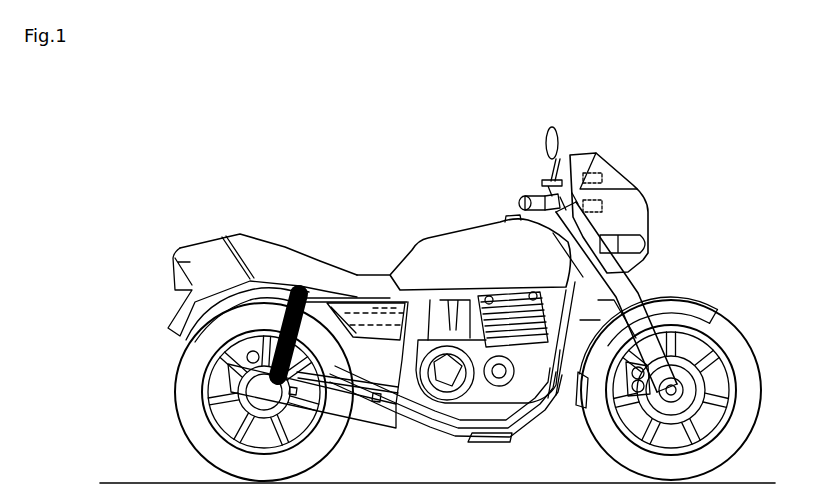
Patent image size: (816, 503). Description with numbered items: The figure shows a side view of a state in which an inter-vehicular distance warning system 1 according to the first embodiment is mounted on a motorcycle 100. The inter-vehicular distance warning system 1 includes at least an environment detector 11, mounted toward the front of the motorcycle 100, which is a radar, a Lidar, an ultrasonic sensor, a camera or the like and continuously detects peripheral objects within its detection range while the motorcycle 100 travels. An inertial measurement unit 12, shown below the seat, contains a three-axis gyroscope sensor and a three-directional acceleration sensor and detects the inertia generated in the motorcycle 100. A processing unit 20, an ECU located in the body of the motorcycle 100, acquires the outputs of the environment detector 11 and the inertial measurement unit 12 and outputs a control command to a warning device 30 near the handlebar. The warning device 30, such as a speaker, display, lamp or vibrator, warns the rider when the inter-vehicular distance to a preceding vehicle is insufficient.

The inter-vehicular distance warning system 1 is at (284, 133).
The motorcycle 100 is at (741, 97).
The environment detector 11 is at (556, 148).
The inertial measurement unit 12 is at (361, 310).
The processing unit 20 is at (396, 305).
The warning device 30 is at (540, 180).